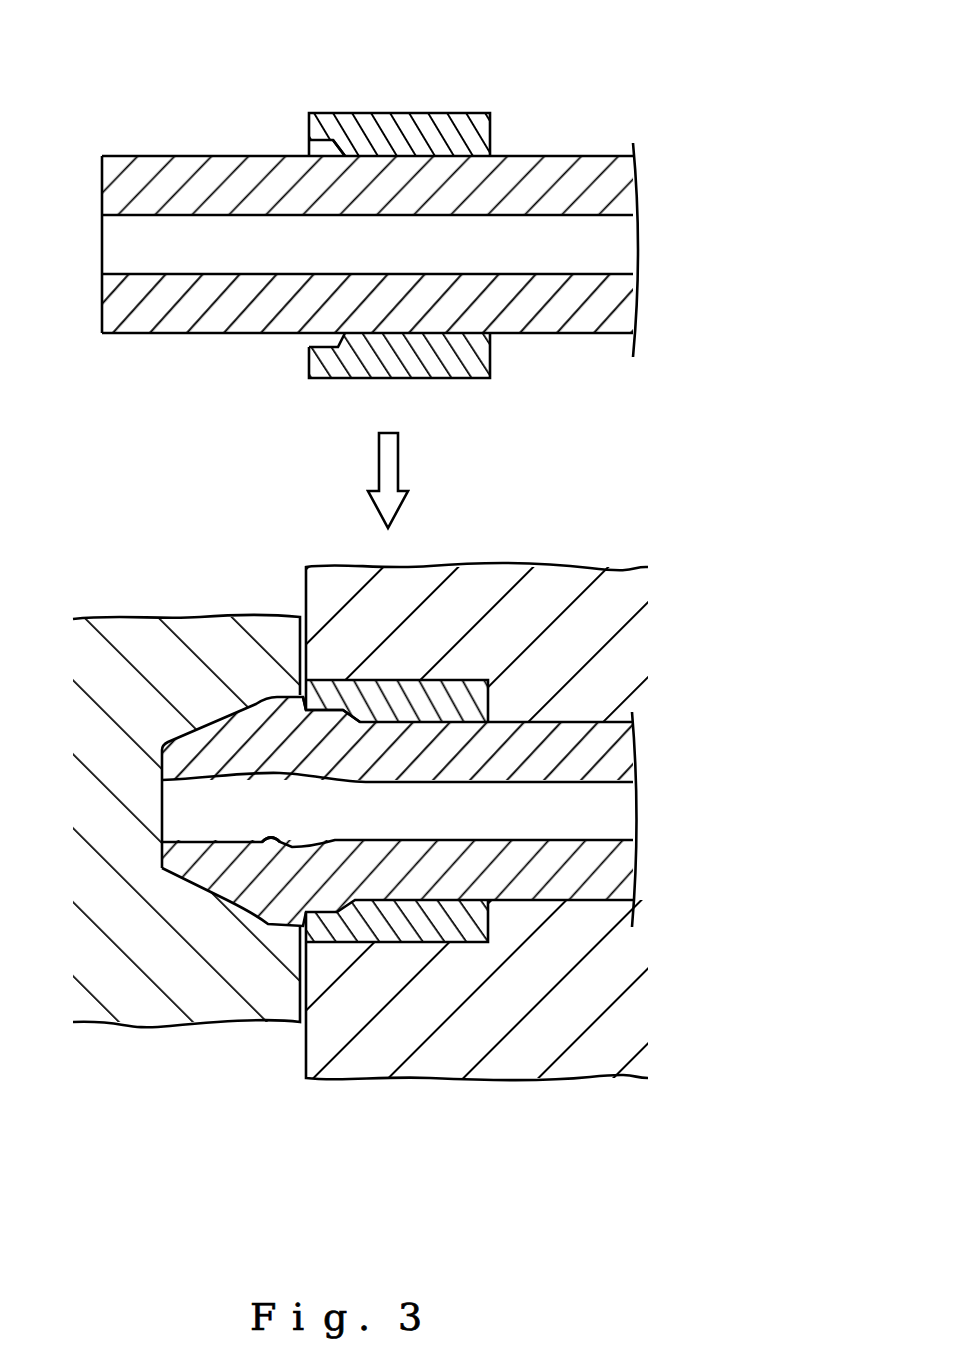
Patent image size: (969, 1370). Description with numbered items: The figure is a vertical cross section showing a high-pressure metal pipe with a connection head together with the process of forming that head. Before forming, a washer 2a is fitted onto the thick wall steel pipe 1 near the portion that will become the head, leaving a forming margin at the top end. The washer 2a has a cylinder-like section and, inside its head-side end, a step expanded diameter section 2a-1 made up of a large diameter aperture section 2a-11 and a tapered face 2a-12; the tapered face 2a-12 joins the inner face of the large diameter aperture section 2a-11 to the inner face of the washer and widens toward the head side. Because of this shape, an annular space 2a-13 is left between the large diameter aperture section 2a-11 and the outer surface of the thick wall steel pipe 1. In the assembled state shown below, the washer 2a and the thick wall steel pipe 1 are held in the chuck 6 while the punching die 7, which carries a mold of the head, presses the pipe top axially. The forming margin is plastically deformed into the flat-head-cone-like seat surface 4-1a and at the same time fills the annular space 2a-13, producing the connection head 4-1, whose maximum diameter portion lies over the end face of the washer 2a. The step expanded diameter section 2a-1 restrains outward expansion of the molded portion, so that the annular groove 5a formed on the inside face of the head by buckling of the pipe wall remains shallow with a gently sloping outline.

The thick wall steel pipe 1 is at (568, 180).
The washer 2a is at (437, 122).
The step expanded diameter section 2a-1 is at (292, 148).
The large diameter aperture section 2a-11 is at (308, 147).
The tapered face 2a-12 is at (334, 143).
The annular space 2a-13 is at (308, 340).
The connection head 4-1 is at (373, 800).
The flat-head-cone-like seat surface 4-1a is at (227, 757).
The annular groove 5a is at (257, 845).
The chuck 6 is at (532, 1057).
The punching die 7 is at (113, 980).